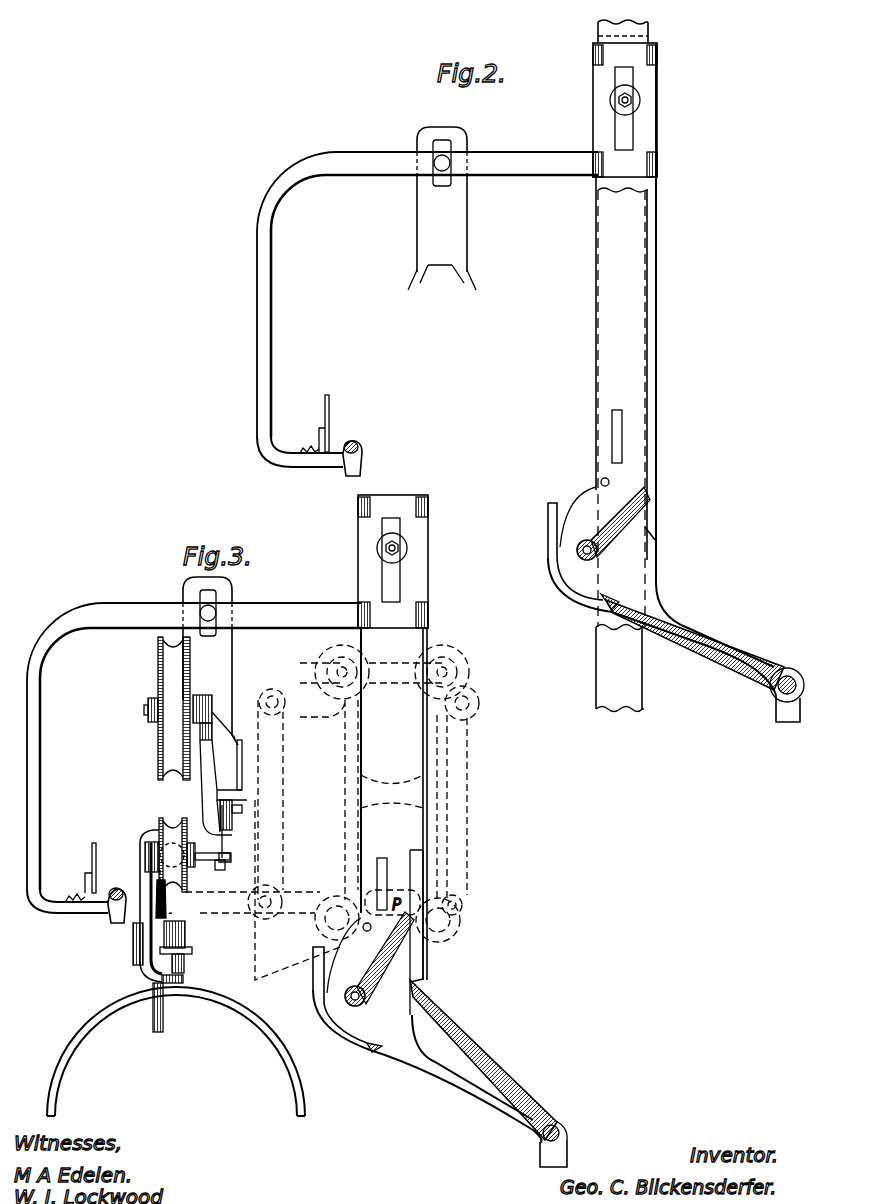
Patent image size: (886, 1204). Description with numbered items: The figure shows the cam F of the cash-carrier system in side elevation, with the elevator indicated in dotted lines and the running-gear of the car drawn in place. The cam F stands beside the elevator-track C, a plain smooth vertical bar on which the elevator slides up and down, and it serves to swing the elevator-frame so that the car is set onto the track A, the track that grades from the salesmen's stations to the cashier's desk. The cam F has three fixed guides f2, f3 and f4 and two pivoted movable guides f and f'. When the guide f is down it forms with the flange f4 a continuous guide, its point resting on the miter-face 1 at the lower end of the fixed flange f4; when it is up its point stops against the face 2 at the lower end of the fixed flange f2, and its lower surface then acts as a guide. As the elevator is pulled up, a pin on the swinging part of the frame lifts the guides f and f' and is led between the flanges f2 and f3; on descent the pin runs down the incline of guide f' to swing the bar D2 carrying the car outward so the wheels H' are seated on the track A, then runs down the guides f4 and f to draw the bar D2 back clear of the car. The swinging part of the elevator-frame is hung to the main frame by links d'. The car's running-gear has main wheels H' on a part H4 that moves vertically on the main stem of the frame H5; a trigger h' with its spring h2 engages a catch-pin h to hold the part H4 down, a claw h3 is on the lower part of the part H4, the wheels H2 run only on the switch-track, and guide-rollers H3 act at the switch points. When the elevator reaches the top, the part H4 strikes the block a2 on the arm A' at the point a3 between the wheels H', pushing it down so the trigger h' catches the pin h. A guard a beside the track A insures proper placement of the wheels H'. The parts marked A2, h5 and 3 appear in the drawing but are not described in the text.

In FIG. 3, the arm A' is at (194, 758).
In FIG. 2, the track A is at (361, 450).
In FIG. 3, the track A is at (116, 893).
In FIG. 2, the guard a is at (329, 426).
In FIG. 3, the guard a is at (92, 862).
In FIG. 2, the block a2 is at (440, 272).
In FIG. 3, the block a2 is at (210, 661).
In FIG. 3, the point a3 is at (207, 712).
In FIG. 3, the clamp plate A2 is at (368, 570).
In FIG. 2, the elevator-track C is at (650, 30).
In FIG. 3, the elevator-track C is at (394, 804).
In FIG. 3, the main wheels H' is at (167, 708).
In FIG. 3, the wheels H2 is at (159, 828).
In FIG. 3, the guide-rollers H3 is at (185, 964).
In FIG. 3, the part H4 is at (208, 772).
In FIG. 3, the frame H5 is at (140, 972).
In FIG. 3, the catch-pin h is at (220, 857).
In FIG. 3, the trigger h' is at (245, 801).
In FIG. 3, the spring h2 is at (243, 805).
In FIG. 3, the claw h3 is at (192, 951).
In FIG. 3, the block h5 is at (184, 934).
In FIG. 3, the bar D2 is at (186, 912).
In FIG. 3, the links d' is at (337, 812).
In FIG. 2, the cam F is at (658, 581).
In FIG. 3, the cam F is at (440, 1042).
In FIG. 2, the movable guide f is at (695, 645).
In FIG. 3, the movable guide f is at (483, 1060).
In FIG. 2, the movable guide f' is at (613, 523).
In FIG. 3, the movable guide f' is at (379, 959).
In FIG. 2, the fixed guide f2 is at (657, 422).
In FIG. 3, the fixed guide f2 is at (412, 850).
In FIG. 2, the fixed guide f3 is at (622, 410).
In FIG. 3, the fixed guide f3 is at (382, 858).
In FIG. 2, the fixed guide f4 is at (558, 517).
In FIG. 3, the fixed guide f4 is at (313, 970).
In FIG. 2, the miter-face 1 is at (609, 598).
In FIG. 3, the miter-face 1 is at (374, 1048).
In FIG. 2, the face 2 is at (655, 540).
In FIG. 3, the face 2 is at (421, 998).
In FIG. 2, the pin 3 is at (609, 482).
In FIG. 3, the pin 3 is at (364, 932).